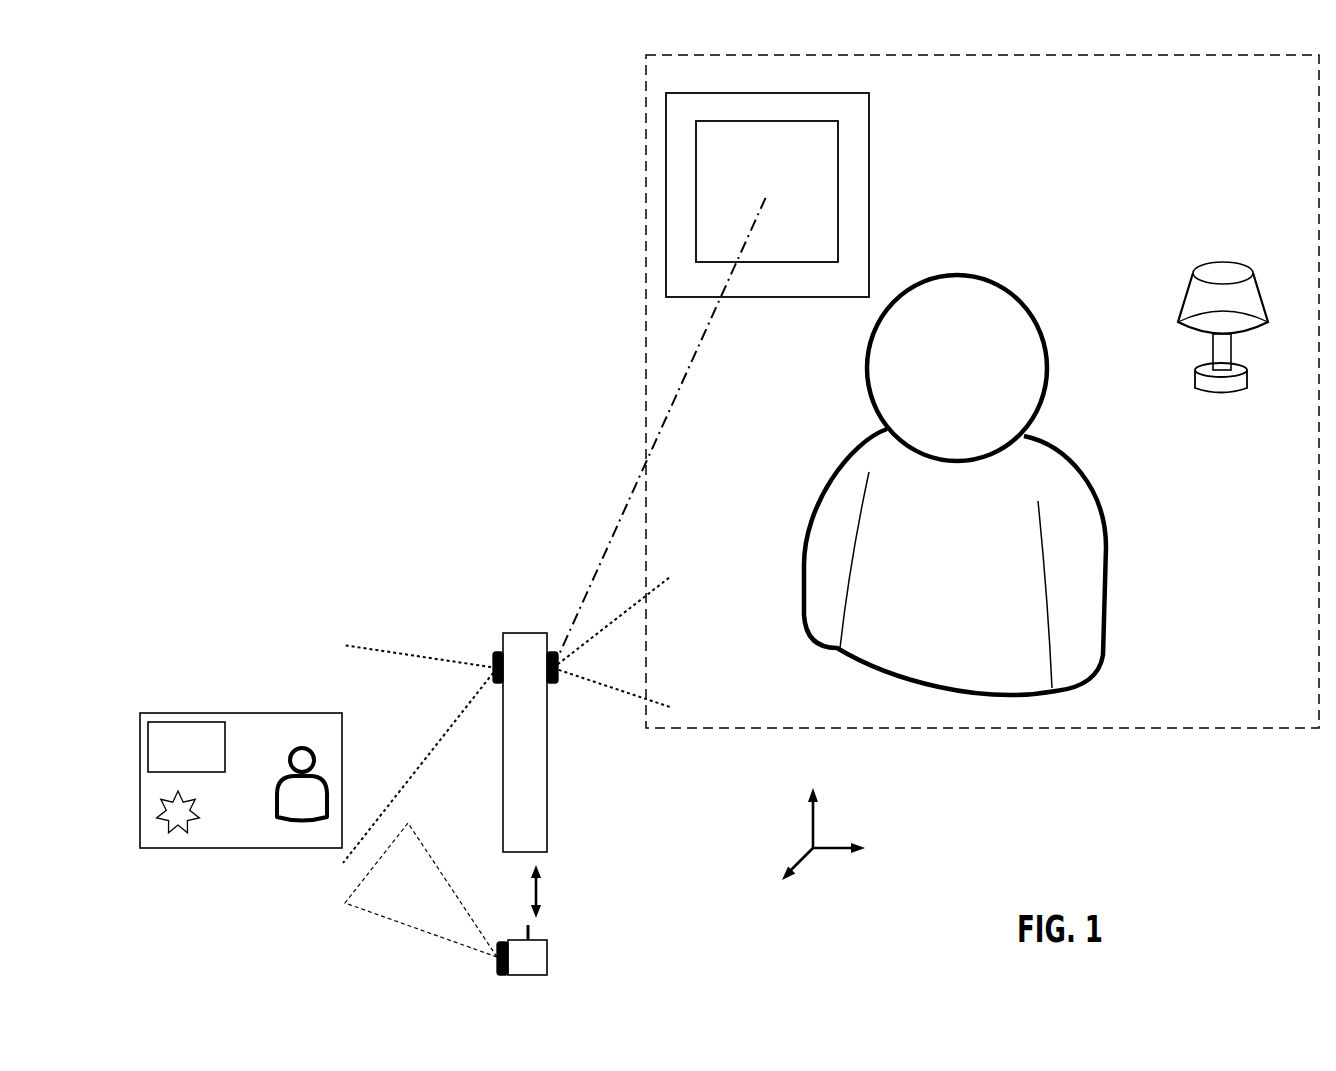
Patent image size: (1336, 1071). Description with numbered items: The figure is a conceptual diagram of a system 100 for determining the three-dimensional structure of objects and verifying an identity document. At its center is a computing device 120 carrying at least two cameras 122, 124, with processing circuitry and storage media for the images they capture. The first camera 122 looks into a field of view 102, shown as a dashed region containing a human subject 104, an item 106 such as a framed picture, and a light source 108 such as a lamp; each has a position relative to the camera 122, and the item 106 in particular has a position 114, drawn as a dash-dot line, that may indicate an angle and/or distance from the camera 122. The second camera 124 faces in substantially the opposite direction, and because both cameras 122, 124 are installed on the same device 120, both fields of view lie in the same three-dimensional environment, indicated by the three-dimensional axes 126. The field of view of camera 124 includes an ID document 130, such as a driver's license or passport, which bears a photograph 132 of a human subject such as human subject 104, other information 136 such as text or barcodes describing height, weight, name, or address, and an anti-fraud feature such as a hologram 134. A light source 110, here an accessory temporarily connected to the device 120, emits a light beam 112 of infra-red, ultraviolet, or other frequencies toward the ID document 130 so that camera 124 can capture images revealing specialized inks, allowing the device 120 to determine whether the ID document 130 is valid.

The system 100 is at (192, 105).
The field of view 102 is at (1267, 107).
The human subject 104 is at (1108, 570).
The item 106 is at (875, 157).
The light source 108 is at (1223, 260).
The light source 110 is at (522, 920).
The light beam 112 is at (432, 917).
The position 114 is at (659, 432).
The computing device 120 is at (540, 752).
The camera 122 is at (553, 685).
The camera 124 is at (497, 650).
The 3D axes 126 is at (827, 863).
The ID document 130 is at (213, 708).
The photograph 132 is at (292, 817).
The hologram 134 is at (173, 833).
The other information 136 is at (148, 745).